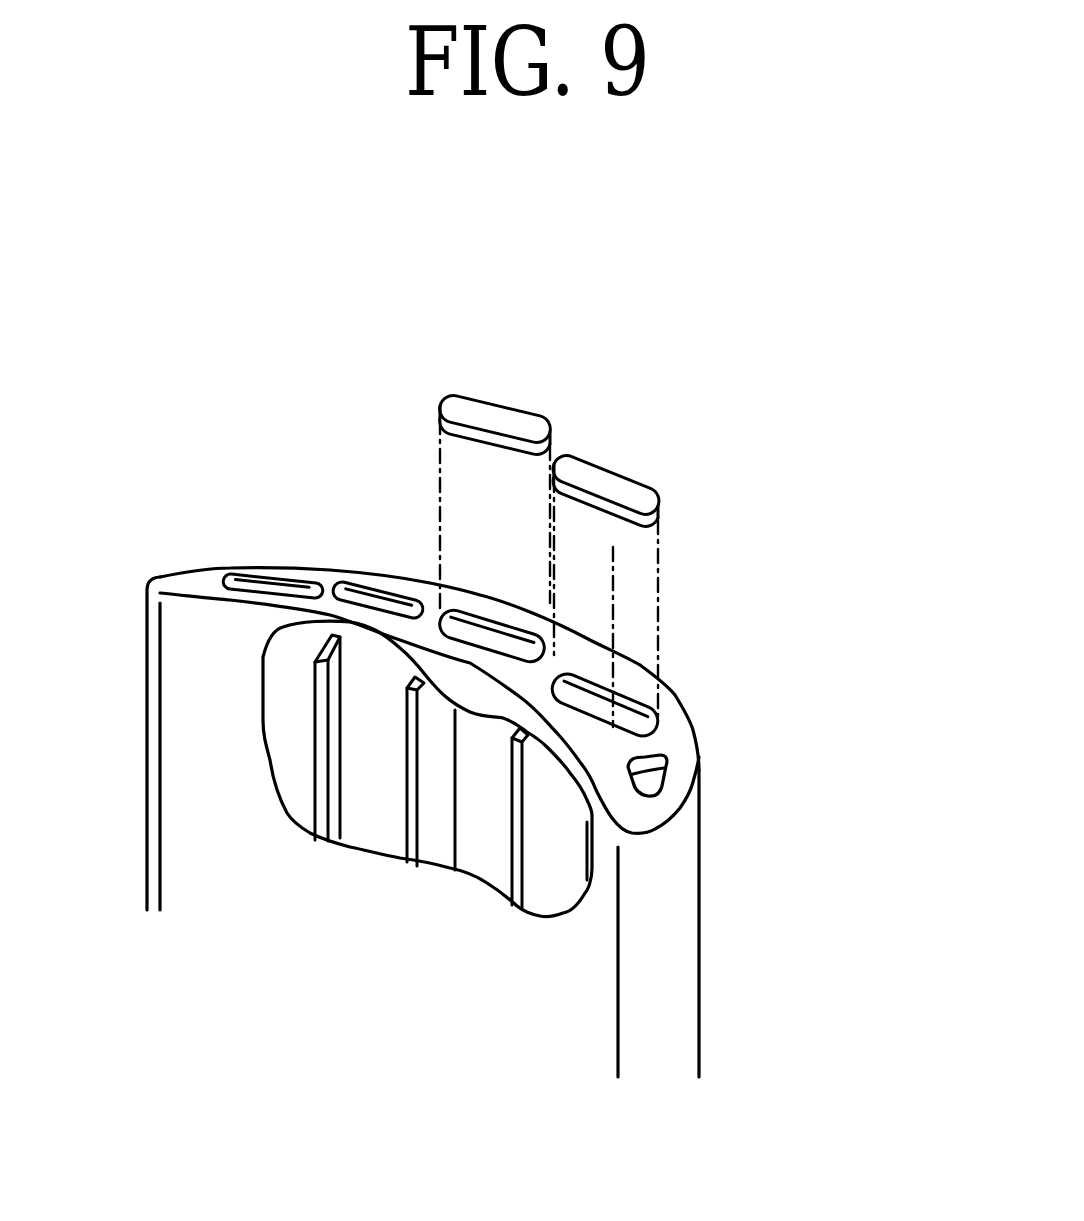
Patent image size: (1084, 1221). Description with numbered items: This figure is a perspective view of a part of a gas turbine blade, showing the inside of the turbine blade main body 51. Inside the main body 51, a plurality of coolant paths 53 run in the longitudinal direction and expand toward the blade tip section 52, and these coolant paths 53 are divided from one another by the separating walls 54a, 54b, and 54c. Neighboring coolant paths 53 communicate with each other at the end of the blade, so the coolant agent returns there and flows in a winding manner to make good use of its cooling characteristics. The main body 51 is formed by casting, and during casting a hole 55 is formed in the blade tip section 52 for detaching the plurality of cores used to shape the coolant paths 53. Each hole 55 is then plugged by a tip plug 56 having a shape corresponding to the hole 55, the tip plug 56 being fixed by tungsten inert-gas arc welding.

The turbine blade main body 51 is at (737, 944).
The blade tip section 52 is at (680, 747).
The coolant path 53 is at (283, 697).
The separating wall 54a is at (318, 787).
The separating wall 54b is at (440, 863).
The separating wall 54c is at (547, 882).
The hole 55 is at (360, 590).
The tip plug 56 is at (512, 412).